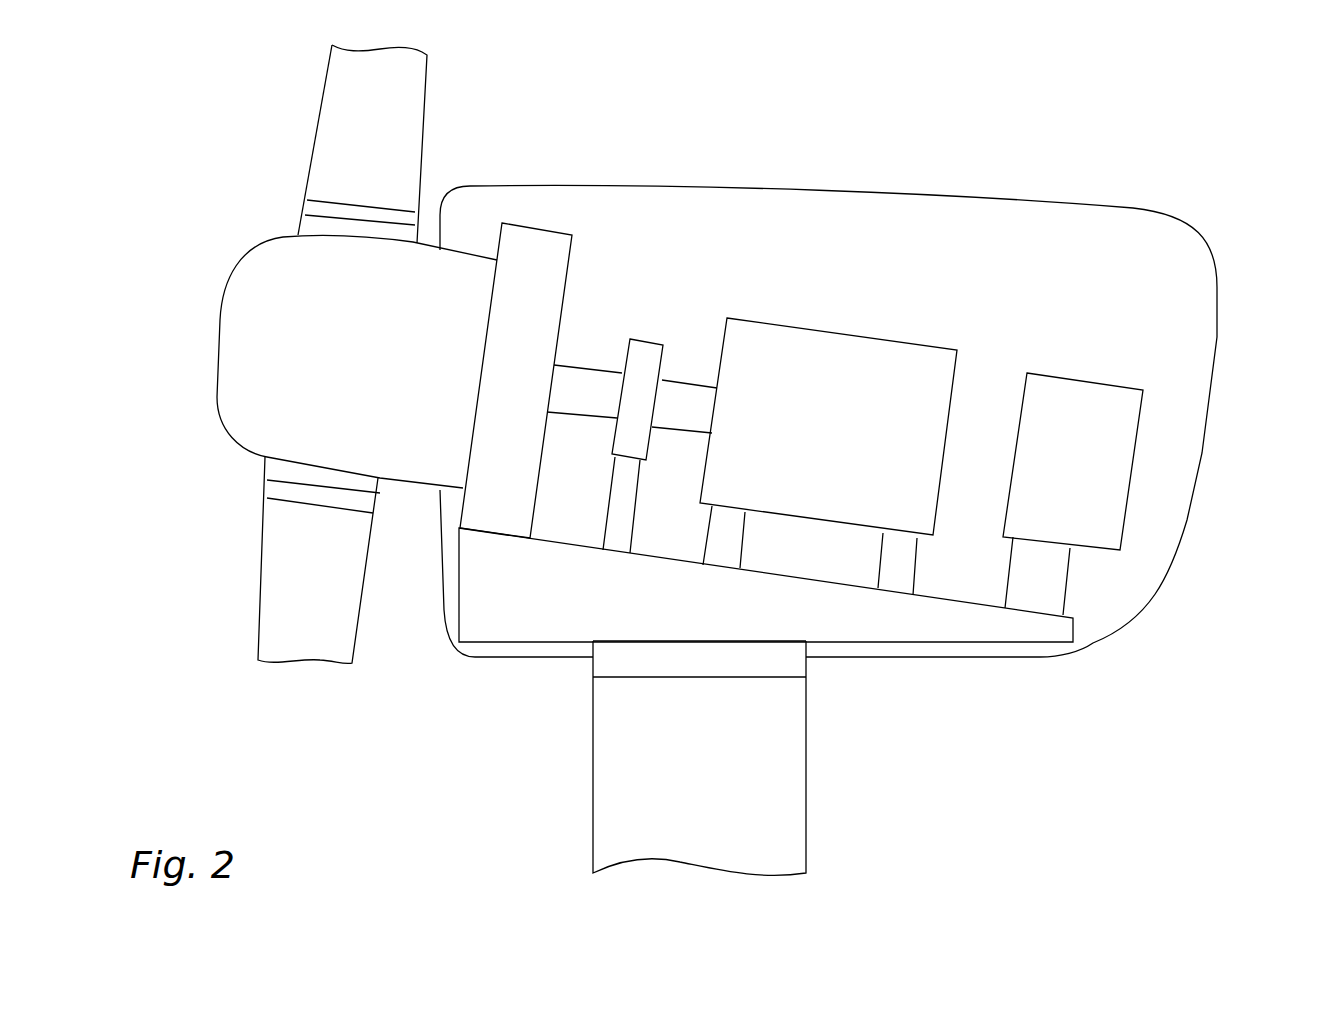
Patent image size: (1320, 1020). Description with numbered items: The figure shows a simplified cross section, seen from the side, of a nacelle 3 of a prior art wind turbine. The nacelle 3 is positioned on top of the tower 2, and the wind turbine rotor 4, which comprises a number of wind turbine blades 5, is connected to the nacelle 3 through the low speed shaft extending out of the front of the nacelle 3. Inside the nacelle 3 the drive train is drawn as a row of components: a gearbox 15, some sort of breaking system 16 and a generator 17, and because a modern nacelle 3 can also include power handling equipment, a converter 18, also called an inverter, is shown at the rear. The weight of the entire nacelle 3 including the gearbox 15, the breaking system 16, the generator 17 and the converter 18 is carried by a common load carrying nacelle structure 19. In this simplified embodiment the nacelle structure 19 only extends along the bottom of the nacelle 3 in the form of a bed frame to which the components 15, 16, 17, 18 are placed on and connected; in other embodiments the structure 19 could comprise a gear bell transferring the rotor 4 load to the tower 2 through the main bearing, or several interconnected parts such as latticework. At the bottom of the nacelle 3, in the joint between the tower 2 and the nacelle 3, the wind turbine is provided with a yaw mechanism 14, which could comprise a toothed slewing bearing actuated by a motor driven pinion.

The tower 2 is at (775, 832).
The nacelle 3 is at (1250, 227).
The wind turbine rotor 4 is at (313, 328).
The wind turbine blade 5 is at (387, 135).
The yaw mechanism 14 is at (622, 658).
The gearbox 15 is at (535, 260).
The breaking system 16 is at (647, 362).
The generator 17 is at (793, 375).
The converter 18 is at (1093, 428).
The nacelle structure 19 is at (897, 617).